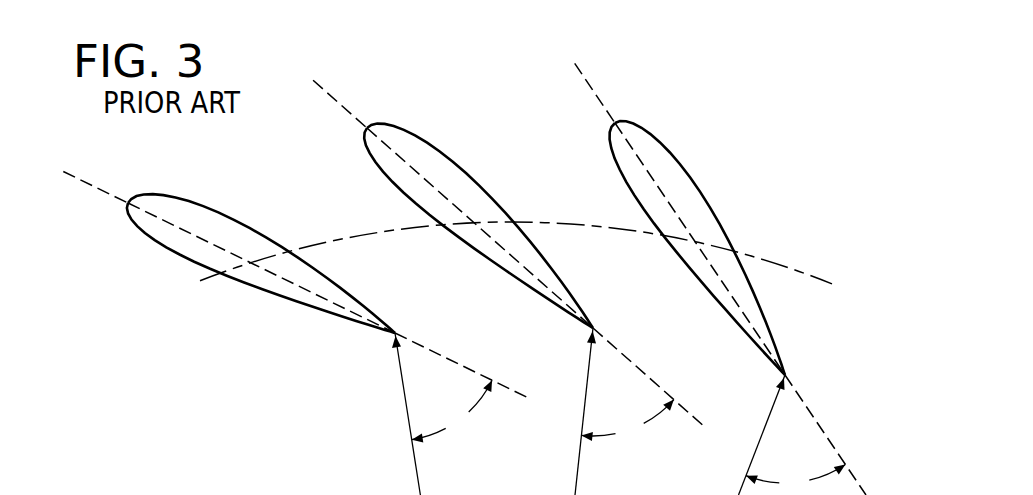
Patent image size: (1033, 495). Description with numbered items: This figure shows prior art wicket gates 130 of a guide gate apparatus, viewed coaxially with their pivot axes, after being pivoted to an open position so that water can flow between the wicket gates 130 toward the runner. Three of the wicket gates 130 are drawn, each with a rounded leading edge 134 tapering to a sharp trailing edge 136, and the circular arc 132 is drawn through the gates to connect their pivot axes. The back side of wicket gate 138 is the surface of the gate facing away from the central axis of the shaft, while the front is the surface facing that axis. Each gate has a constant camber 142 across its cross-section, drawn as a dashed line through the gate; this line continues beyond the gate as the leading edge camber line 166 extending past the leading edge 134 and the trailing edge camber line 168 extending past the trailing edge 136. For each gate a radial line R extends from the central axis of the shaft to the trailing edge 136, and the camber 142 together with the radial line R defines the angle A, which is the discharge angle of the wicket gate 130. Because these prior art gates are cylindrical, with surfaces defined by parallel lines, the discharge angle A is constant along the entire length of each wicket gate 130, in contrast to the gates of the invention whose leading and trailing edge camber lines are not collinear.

The wicket gate 130 is at (456, 244).
The circular arc 132 is at (200, 281).
The leading edge 134 is at (127, 205).
The trailing edge 136 is at (398, 333).
The back side of wicket gate 138 is at (250, 229).
The camber 142 is at (326, 299).
The camber line for leading edge 166 is at (72, 176).
The camber line for trailing edge 168 is at (468, 372).
The radial line R is at (405, 400).
The discharge angle A is at (629, 437).